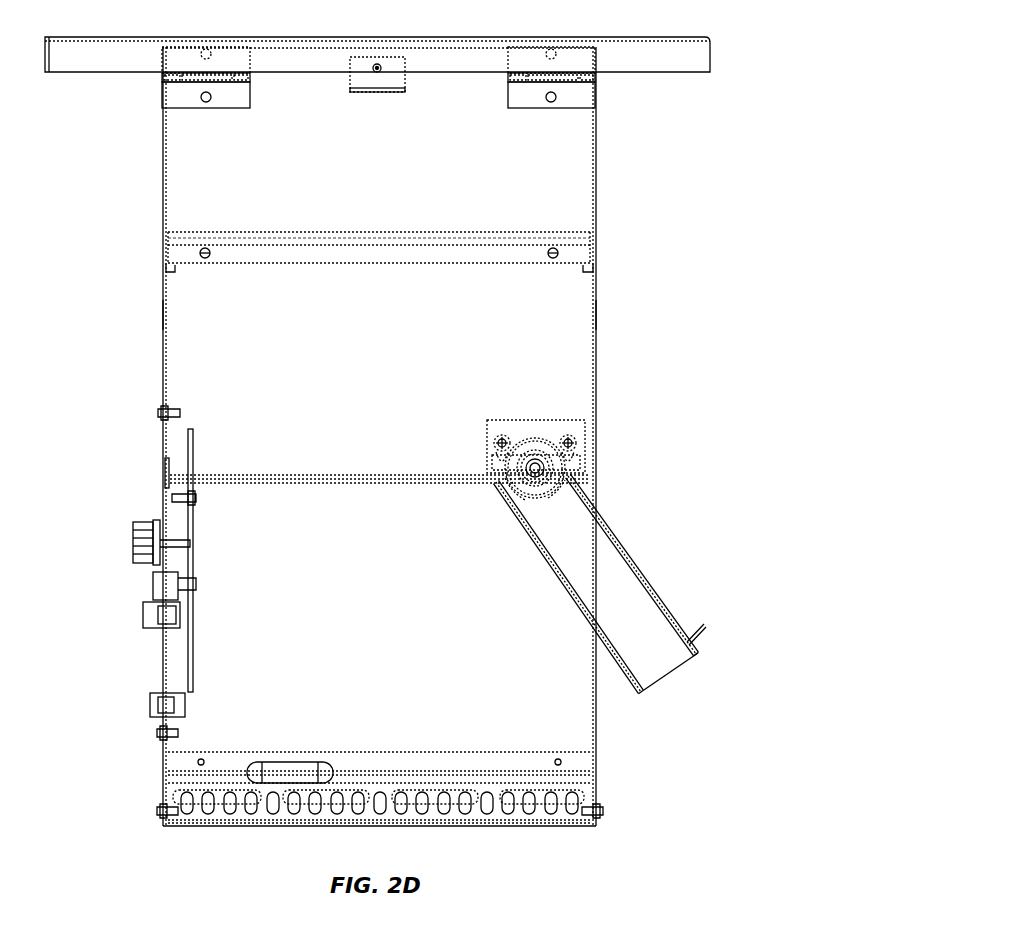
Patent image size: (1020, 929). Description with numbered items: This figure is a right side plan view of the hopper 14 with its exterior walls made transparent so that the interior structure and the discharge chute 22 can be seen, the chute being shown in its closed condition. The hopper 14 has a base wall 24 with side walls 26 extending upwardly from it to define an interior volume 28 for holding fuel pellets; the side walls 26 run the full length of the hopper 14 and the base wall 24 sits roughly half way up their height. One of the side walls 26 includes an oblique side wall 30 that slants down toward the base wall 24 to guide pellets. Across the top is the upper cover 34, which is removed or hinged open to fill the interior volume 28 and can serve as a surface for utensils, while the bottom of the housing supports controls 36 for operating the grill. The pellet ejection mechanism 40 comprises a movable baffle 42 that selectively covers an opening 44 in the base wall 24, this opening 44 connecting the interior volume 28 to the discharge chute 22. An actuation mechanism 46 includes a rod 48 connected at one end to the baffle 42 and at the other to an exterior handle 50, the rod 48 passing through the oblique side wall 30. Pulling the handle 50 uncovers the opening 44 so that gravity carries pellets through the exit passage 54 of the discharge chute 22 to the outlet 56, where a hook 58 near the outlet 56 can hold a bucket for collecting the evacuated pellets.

The hopper 14 is at (137, 451).
The discharge chute 22 is at (630, 556).
The base wall 24 is at (316, 474).
The side walls 26 is at (170, 316).
The interior volume 28 is at (578, 182).
The oblique side wall 30 is at (367, 356).
The upper cover 34 is at (632, 37).
The controls 36 is at (152, 590).
The pellet ejection mechanism 40 is at (603, 443).
The movable baffle 42 is at (499, 444).
The opening 44 is at (512, 499).
The actuation mechanism 46 is at (537, 442).
The rod 48 is at (540, 468).
The handle 50 is at (543, 498).
The exit passage 54 is at (636, 651).
The outlet 56 is at (672, 677).
The hook 58 is at (692, 636).